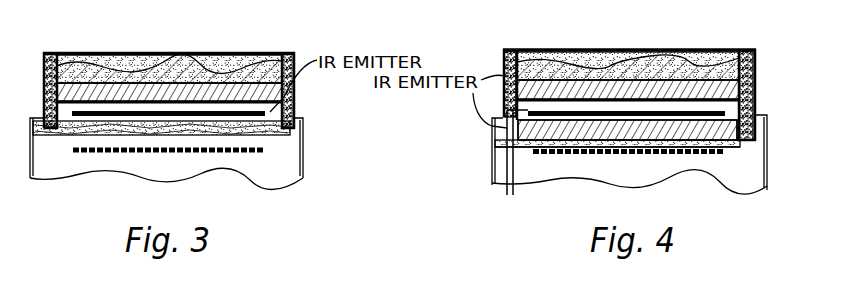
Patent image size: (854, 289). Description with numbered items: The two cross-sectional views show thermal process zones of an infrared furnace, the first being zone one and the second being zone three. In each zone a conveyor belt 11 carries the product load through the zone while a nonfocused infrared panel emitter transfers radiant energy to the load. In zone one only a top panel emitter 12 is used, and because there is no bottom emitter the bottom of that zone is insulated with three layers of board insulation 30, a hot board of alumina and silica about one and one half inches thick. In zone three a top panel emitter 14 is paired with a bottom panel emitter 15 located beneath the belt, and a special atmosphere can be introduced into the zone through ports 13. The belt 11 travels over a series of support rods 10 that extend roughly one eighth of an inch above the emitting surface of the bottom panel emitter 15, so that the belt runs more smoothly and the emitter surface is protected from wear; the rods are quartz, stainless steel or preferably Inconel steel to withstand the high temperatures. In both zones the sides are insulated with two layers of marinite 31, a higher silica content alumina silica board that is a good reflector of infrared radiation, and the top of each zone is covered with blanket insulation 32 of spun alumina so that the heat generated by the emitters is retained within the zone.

In FIG. 3, the support rods 10 is at (292, 116).
In FIG. 4, the support rods 10 is at (755, 115).
In FIG. 3, the belt 11 is at (230, 108).
In FIG. 4, the belt 11 is at (712, 92).
In FIG. 3, the top panel emitter 12 is at (182, 100).
In FIG. 4, the ports 13 is at (534, 105).
In FIG. 4, the top panel emitter 14 is at (629, 100).
In FIG. 4, the bottom panel emitter 15 is at (728, 136).
In FIG. 3, the board insulation 30 is at (284, 138).
In FIG. 3, the marinite 31 is at (52, 52).
In FIG. 4, the marinite 31 is at (506, 49).
In FIG. 3, the blanket insulation 32 is at (160, 56).
In FIG. 4, the blanket insulation 32 is at (620, 55).